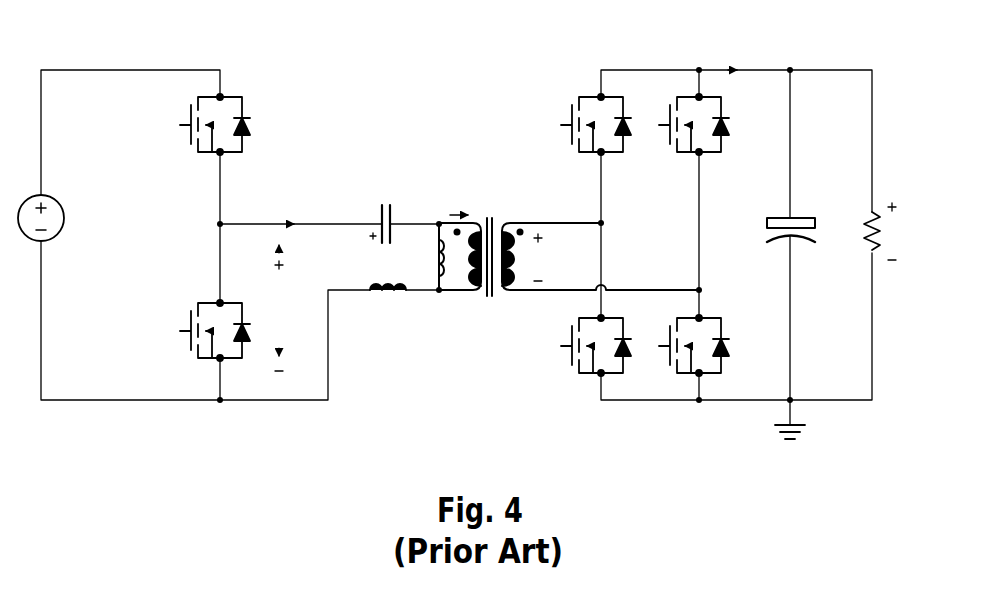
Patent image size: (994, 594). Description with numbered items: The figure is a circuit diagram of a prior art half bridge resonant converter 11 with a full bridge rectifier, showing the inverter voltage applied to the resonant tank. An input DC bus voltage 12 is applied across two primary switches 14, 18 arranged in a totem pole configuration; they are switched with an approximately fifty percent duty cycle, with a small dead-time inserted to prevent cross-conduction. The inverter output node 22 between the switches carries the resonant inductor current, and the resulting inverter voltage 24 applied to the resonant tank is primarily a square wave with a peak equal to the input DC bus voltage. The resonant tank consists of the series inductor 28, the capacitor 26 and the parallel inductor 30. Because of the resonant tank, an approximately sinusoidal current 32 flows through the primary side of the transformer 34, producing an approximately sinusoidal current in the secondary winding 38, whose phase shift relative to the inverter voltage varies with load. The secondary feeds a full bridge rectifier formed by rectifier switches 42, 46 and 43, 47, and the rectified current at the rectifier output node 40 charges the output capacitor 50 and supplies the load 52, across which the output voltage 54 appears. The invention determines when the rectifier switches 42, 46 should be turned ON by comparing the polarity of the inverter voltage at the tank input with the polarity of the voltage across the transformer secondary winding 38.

The prior art resonant converter 11 is at (425, 50).
The input DC bus voltage 12 is at (57, 218).
The primary switch 14 is at (215, 114).
The primary switch 18 is at (215, 318).
The inverter output node / resonant inductor current 22 is at (304, 185).
The inverter output voltage 24 is at (306, 329).
The capacitor 26 is at (384, 210).
The series inductor 28 is at (387, 303).
The parallel inductor 30 is at (440, 256).
The sinusoidal current 32 is at (549, 254).
The transformer 34 is at (482, 312).
The transformer secondary winding 38 is at (551, 236).
The rectifier output node 40 is at (750, 82).
The rectifier switch 42 is at (694, 117).
The rectifier switch 43 is at (596, 336).
The rectifier switch 46 is at (596, 114).
The rectifier switch 47 is at (694, 336).
The output capacitor 50 is at (786, 219).
The load resistor 52 is at (856, 231).
The output voltage 54 is at (911, 205).